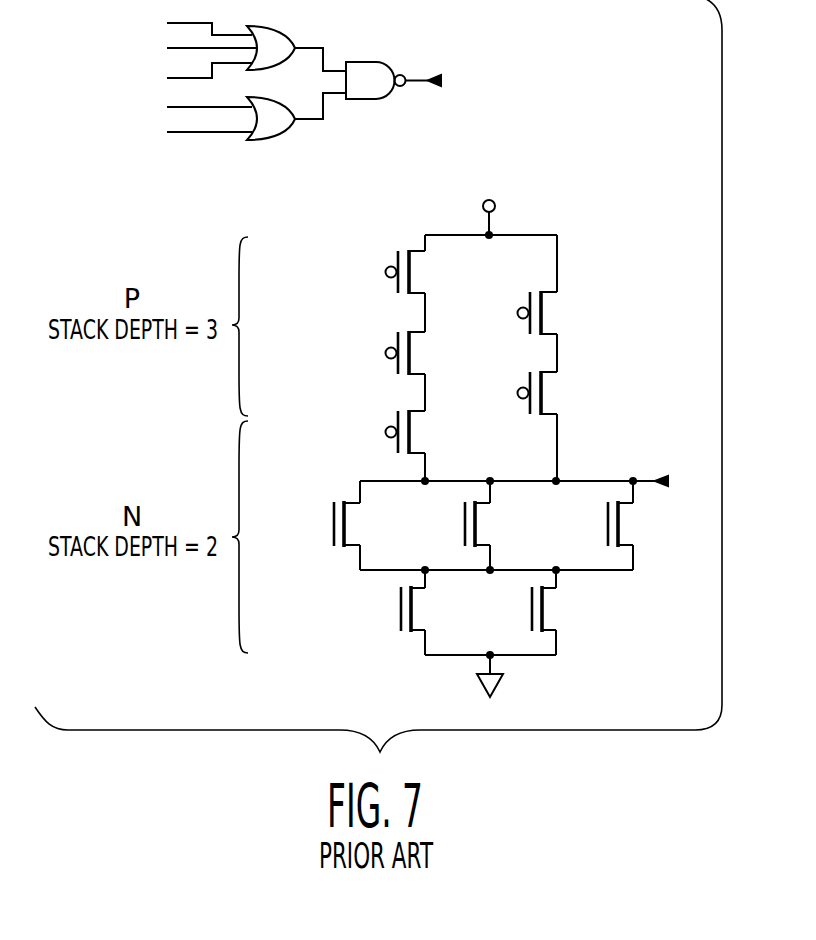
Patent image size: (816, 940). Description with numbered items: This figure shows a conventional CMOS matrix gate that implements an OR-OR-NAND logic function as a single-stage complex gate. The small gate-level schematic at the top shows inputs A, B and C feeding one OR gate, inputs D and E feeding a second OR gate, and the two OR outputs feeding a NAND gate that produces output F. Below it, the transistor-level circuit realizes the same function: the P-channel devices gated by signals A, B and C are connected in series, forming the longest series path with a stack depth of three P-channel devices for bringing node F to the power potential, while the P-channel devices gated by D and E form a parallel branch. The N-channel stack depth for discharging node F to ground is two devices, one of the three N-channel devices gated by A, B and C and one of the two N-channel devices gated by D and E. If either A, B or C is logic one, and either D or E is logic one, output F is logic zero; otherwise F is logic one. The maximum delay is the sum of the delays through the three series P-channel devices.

The input signal A is at (280, 524).
The input signal B is at (465, 524).
The input signal C is at (608, 524).
The input signal D is at (345, 609).
The input signal E is at (532, 609).
The output F is at (548, 281).